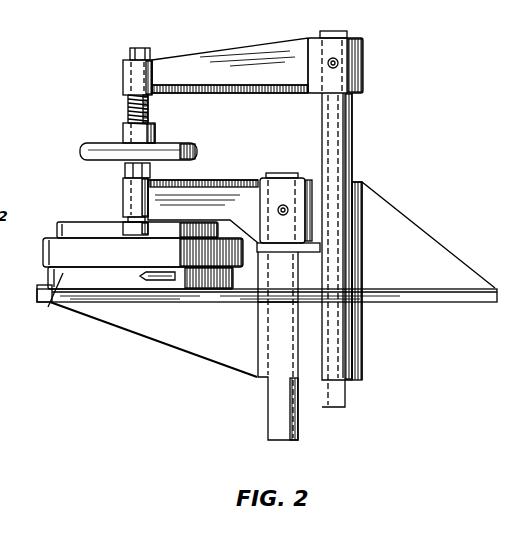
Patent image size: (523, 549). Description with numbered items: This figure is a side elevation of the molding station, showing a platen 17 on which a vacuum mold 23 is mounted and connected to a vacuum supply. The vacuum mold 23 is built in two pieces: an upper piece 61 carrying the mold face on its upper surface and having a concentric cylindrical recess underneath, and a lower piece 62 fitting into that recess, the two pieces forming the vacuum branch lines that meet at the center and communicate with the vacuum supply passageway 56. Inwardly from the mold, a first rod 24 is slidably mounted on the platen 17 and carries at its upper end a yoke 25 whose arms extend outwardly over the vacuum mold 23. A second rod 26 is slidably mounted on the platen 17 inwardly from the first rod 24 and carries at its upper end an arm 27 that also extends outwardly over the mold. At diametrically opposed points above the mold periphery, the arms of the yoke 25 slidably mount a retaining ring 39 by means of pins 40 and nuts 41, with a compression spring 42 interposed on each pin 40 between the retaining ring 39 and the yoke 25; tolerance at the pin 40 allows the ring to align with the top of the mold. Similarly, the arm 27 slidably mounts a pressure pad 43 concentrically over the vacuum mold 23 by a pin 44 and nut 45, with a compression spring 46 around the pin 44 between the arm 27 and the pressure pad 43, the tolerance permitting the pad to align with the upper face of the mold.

The platen 17 is at (405, 299).
The vacuum mold 23 is at (40, 276).
The first rod 24 is at (262, 392).
The yoke 25 is at (199, 189).
The second rod 26 is at (322, 136).
The arm 27 is at (364, 60).
The retaining ring 39 is at (57, 236).
The pin 40 is at (128, 174).
The nut 41 is at (150, 178).
The compression spring 42 is at (122, 218).
The pressure pad 43 is at (82, 151).
The pin 44 is at (128, 110).
The nut 45 is at (127, 62).
The compression spring 46 is at (150, 110).
The vacuum supply passageway 56 is at (140, 275).
The upper piece 61 is at (43, 254).
The lower piece 62 is at (53, 309).